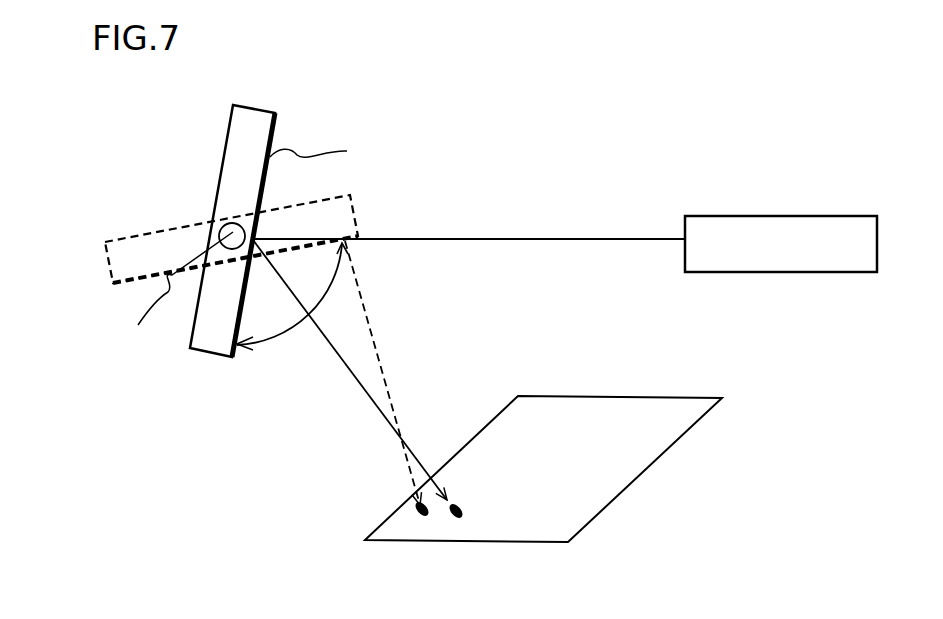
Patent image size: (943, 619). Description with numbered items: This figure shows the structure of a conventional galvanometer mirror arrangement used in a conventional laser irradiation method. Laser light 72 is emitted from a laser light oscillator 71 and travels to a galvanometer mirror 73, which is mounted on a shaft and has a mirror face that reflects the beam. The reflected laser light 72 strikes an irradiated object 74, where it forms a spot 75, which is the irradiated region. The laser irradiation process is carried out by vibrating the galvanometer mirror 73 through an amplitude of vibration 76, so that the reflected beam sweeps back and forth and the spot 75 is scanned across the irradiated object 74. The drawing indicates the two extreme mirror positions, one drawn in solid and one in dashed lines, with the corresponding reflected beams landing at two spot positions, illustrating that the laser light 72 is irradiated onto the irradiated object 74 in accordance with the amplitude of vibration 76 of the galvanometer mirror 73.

The laser light oscillator 71 is at (737, 272).
The laser light 72 is at (608, 185).
The galvanometer mirror 73 is at (307, 95).
The irradiated object 74 is at (677, 532).
The spot 75 is at (420, 505).
The amplitude of vibration 76 is at (277, 343).